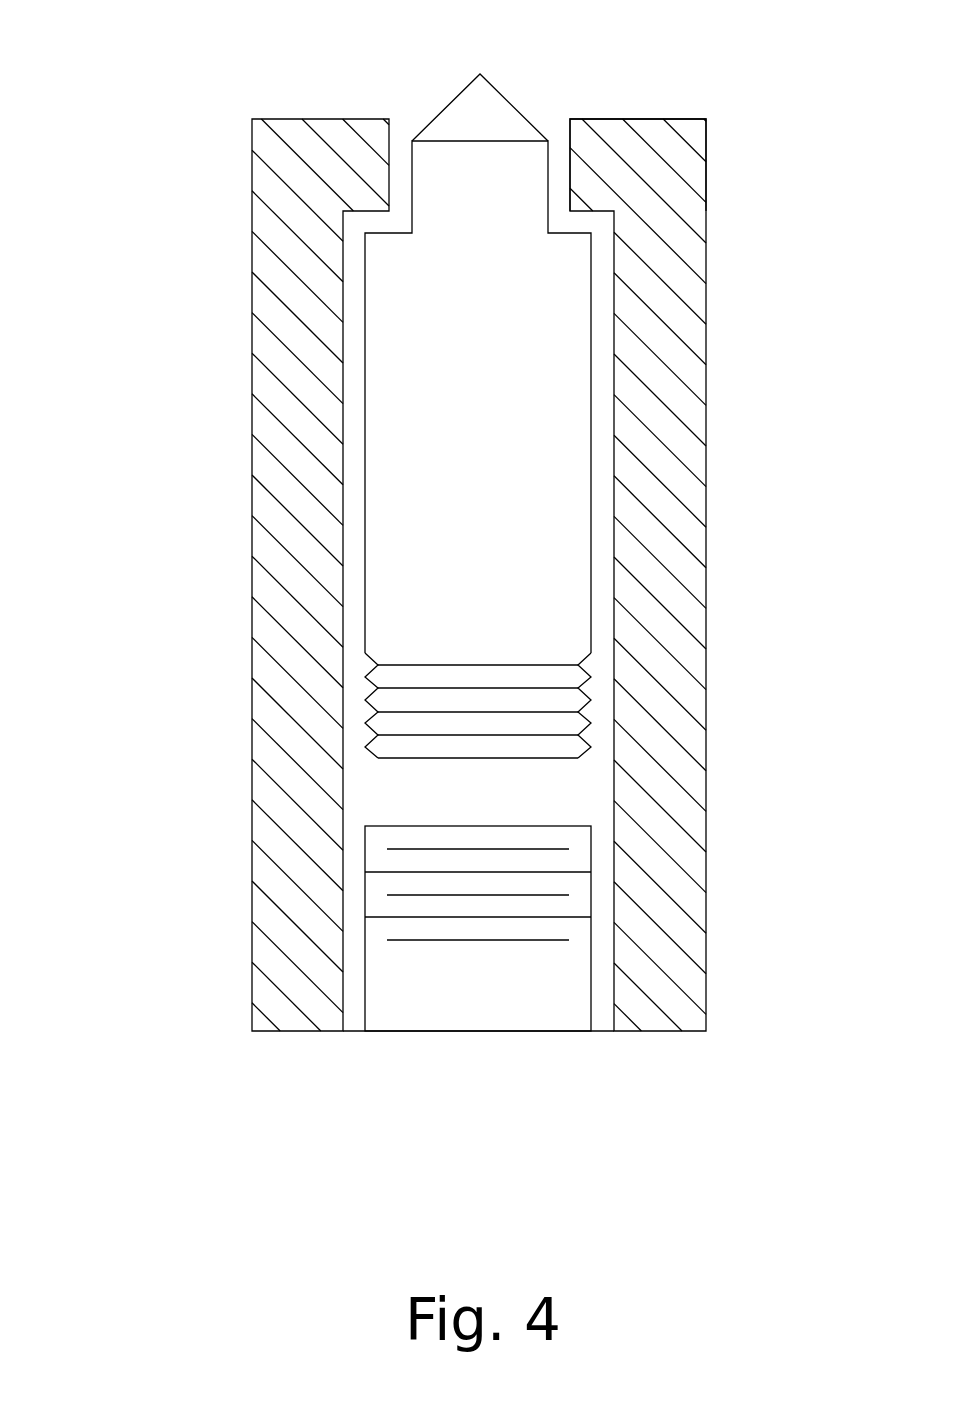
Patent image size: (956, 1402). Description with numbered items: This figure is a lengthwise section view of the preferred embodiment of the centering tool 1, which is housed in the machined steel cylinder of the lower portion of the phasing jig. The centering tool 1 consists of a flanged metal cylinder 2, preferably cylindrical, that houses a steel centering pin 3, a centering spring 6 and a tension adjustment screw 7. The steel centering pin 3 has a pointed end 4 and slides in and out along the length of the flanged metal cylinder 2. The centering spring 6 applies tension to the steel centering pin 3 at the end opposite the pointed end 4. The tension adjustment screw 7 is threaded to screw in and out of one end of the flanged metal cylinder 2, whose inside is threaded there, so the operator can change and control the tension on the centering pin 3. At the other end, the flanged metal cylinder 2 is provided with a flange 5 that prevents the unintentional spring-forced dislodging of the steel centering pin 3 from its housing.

The centering tool 1 is at (252, 502).
The flanged metal cylinder 2 is at (308, 757).
The steel centering pin 3 is at (423, 357).
The pointed end 4 is at (517, 103).
The flange 5 is at (638, 164).
The centering spring 6 is at (590, 700).
The tension adjustment screw 7 is at (523, 983).